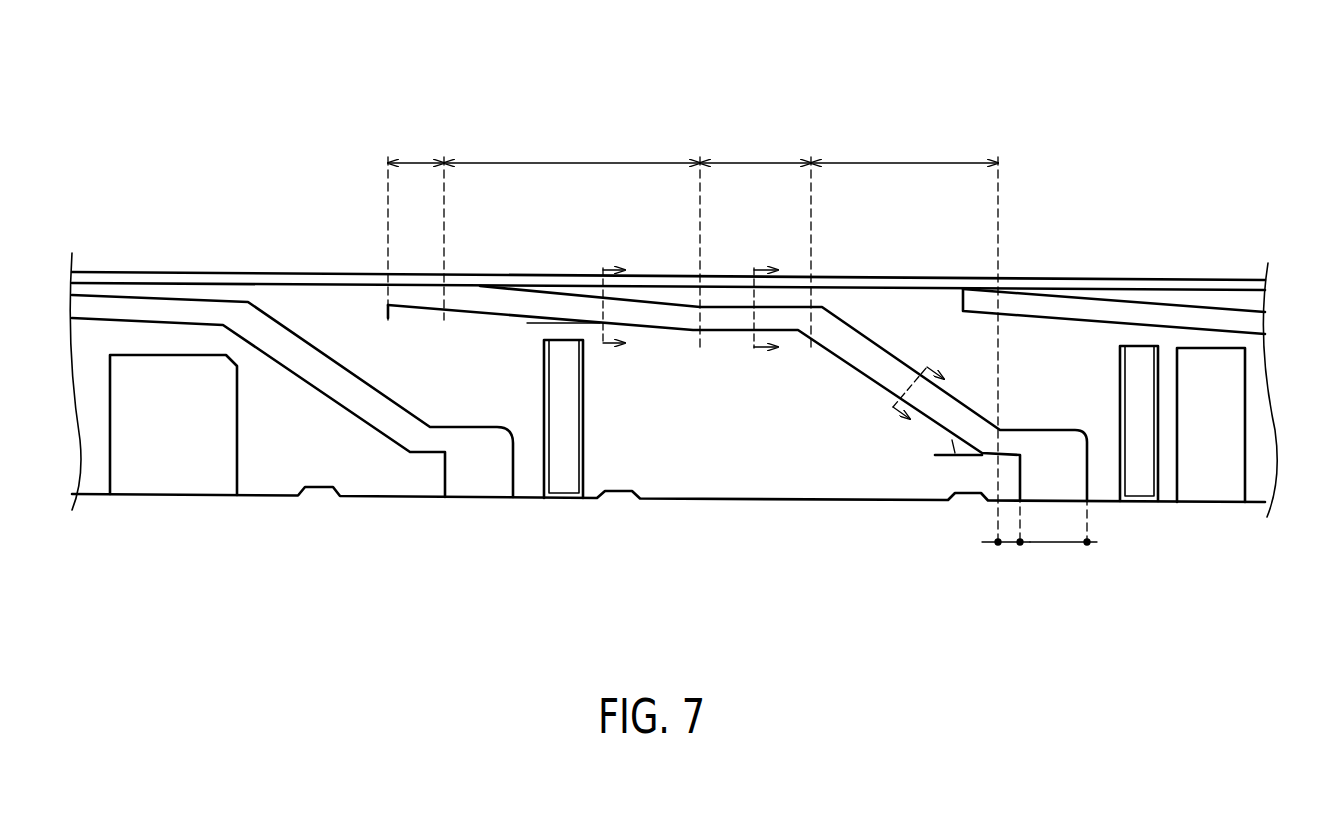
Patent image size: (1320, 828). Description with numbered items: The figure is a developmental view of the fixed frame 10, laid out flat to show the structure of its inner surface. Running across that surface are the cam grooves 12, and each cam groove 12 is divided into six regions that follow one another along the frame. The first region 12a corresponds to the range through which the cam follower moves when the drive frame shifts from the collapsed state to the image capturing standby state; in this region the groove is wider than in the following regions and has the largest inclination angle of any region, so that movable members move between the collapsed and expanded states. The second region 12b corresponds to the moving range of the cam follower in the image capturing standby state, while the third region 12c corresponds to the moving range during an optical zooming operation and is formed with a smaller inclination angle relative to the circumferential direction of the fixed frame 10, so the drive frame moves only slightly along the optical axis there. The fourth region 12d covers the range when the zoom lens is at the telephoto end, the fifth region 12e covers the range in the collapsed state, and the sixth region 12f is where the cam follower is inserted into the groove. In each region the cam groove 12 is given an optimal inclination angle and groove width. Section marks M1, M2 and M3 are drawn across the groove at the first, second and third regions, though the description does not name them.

The fixed frame 10 is at (164, 157).
The cam groove 12 is at (218, 297).
The first region 12a is at (896, 163).
The second region 12b is at (755, 163).
The third region 12c is at (585, 162).
The fourth region 12d is at (414, 162).
The fifth region 12e is at (1002, 545).
The sixth region 12f is at (1067, 545).
The first cross section M1 is at (923, 368).
The second cross section M2 is at (755, 292).
The third cross section M3 is at (603, 290).